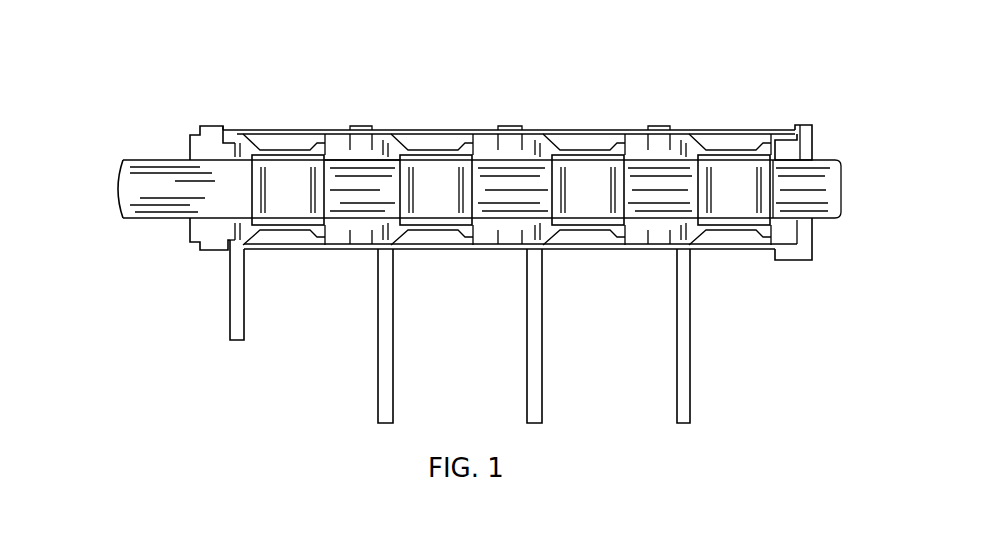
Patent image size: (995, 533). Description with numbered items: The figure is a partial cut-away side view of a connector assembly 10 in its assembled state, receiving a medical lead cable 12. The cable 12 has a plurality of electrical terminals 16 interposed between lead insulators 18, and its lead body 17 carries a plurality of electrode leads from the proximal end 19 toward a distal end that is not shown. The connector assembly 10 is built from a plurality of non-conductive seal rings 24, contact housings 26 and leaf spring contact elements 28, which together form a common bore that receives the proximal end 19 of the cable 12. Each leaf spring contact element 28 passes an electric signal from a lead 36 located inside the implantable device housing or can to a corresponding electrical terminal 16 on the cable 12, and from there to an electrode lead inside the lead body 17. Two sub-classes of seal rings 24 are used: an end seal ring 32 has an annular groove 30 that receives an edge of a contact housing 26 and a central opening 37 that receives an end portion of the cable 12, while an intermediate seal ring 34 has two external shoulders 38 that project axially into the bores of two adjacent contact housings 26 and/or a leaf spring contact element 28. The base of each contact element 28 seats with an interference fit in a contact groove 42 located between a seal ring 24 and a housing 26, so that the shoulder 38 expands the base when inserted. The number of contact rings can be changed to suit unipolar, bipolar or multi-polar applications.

The connector assembly 10 is at (220, 52).
The medical lead cable 12 is at (98, 188).
The electrical terminals 16 is at (308, 230).
The lead body 17 is at (332, 157).
The lead insulators 18 is at (385, 207).
The proximal end 19 is at (826, 188).
The seal rings 24 is at (211, 133).
The contact housings 26 is at (279, 130).
The leaf spring contact elements 28 is at (248, 243).
The annular groove 30 is at (772, 124).
The end seal ring 32 is at (808, 137).
The intermediate seal ring 34 is at (657, 130).
The lead 36 is at (238, 340).
The central opening 37 is at (806, 214).
The external shoulders 38 is at (492, 128).
The contact groove 42 is at (368, 126).